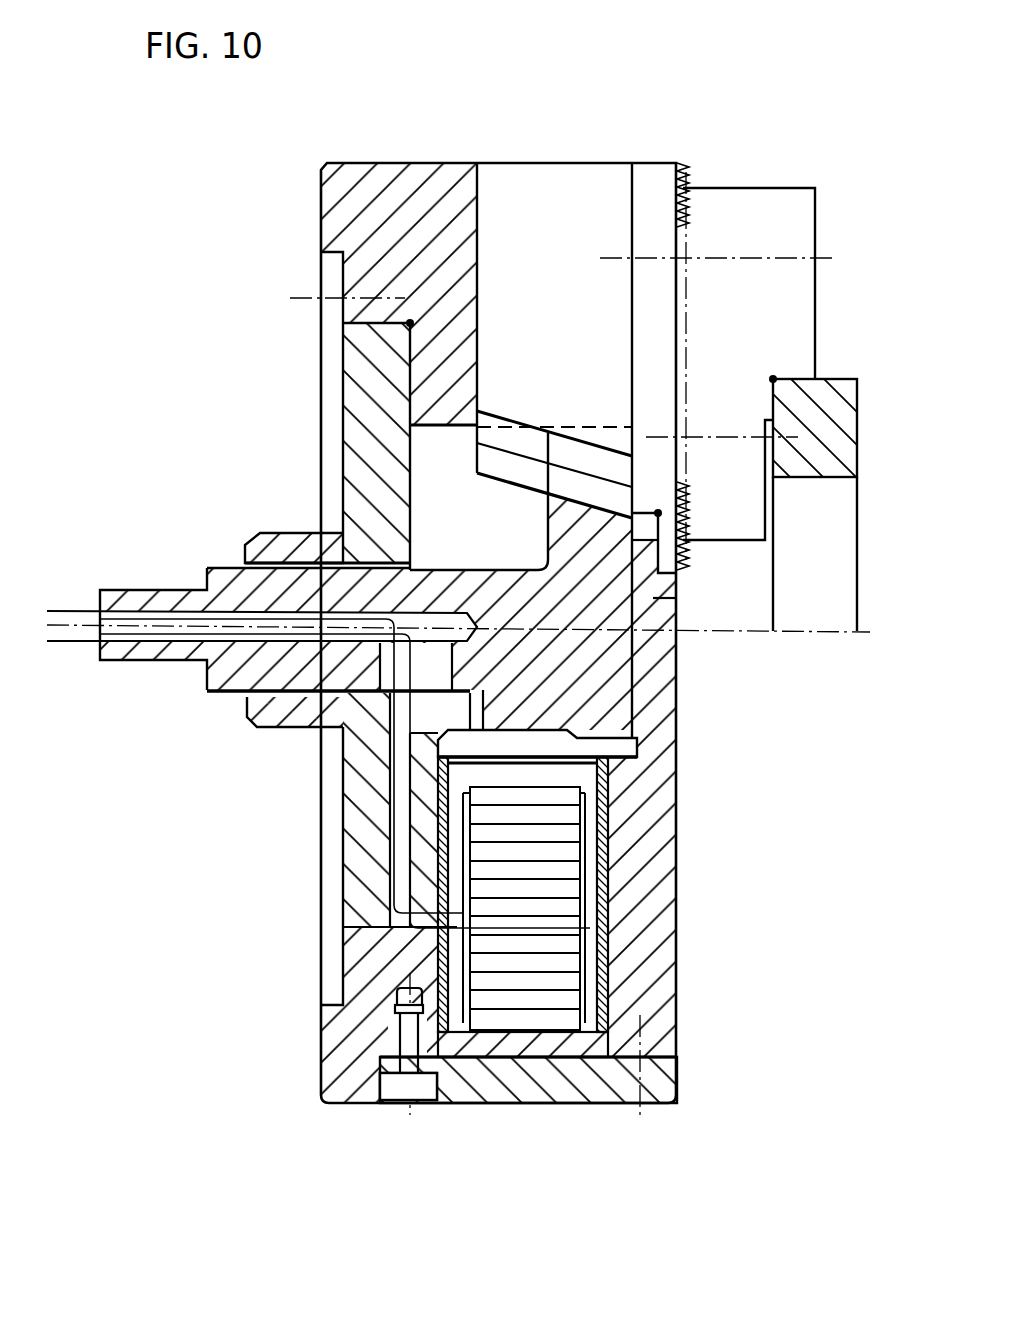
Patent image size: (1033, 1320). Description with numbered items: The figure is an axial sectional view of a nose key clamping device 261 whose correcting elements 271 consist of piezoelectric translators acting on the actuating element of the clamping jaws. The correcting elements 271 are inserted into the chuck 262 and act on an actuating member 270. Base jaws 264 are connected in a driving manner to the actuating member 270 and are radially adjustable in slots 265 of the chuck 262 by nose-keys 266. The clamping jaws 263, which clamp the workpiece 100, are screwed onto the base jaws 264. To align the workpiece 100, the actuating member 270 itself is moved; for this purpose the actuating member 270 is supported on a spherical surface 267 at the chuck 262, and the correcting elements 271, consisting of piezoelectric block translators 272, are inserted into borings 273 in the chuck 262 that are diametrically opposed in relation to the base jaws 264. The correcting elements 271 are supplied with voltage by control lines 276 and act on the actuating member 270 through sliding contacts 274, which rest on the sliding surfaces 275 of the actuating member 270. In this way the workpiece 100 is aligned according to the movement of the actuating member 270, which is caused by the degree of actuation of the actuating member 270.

The clamping device 261 is at (459, 130).
The chuck 262 is at (395, 196).
The clamping jaws 263 is at (750, 210).
The base jaws 264 is at (578, 200).
The slots 265 is at (482, 210).
The nose-keys 266 is at (503, 465).
The spherical surface 267 is at (280, 688).
The actuating member 270 is at (618, 655).
The correcting elements 271 is at (511, 1042).
The piezoelectric block translators 272 is at (567, 965).
The borings 273 is at (601, 874).
The sliding contacts 274 is at (572, 765).
The sliding surfaces 275 is at (568, 737).
The control lines 276 is at (74, 604).
The workpiece 100 is at (838, 405).